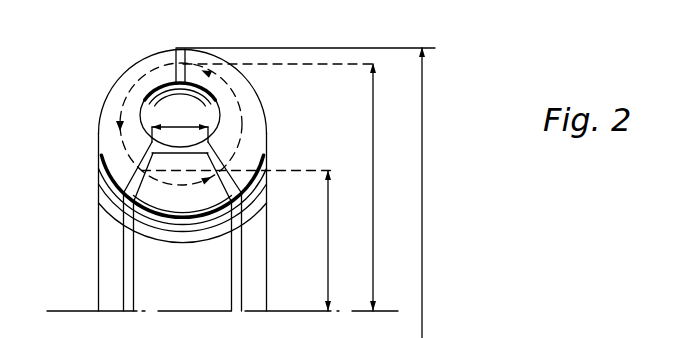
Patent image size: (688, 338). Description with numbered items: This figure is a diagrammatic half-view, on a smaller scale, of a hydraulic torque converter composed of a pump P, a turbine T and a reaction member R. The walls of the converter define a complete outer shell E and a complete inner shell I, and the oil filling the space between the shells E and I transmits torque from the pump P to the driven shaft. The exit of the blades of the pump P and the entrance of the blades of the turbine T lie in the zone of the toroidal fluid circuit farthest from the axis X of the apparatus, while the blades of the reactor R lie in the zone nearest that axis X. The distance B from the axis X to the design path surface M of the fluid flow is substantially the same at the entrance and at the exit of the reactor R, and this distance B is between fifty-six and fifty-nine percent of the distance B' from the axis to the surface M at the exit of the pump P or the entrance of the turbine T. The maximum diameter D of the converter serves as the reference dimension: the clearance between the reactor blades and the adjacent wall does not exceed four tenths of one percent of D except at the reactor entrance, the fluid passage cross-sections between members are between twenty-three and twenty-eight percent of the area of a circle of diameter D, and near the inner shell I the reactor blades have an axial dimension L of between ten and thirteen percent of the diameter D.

The outer shell E is at (128, 73).
The inner shell I is at (160, 84).
The turbine T is at (105, 97).
The design path surface of flow of fluid M is at (124, 139).
The pump P is at (264, 113).
The axial dimension of reactor blades L is at (180, 123).
The reaction member R is at (181, 219).
The axis of the apparatus X is at (65, 310).
The distance from the axis to the design path surface at the reactor B is at (245, 240).
The distance from the axis to the design path surface at the pump exit B' is at (295, 187).
The maximum diameter of the converter D is at (423, 222).